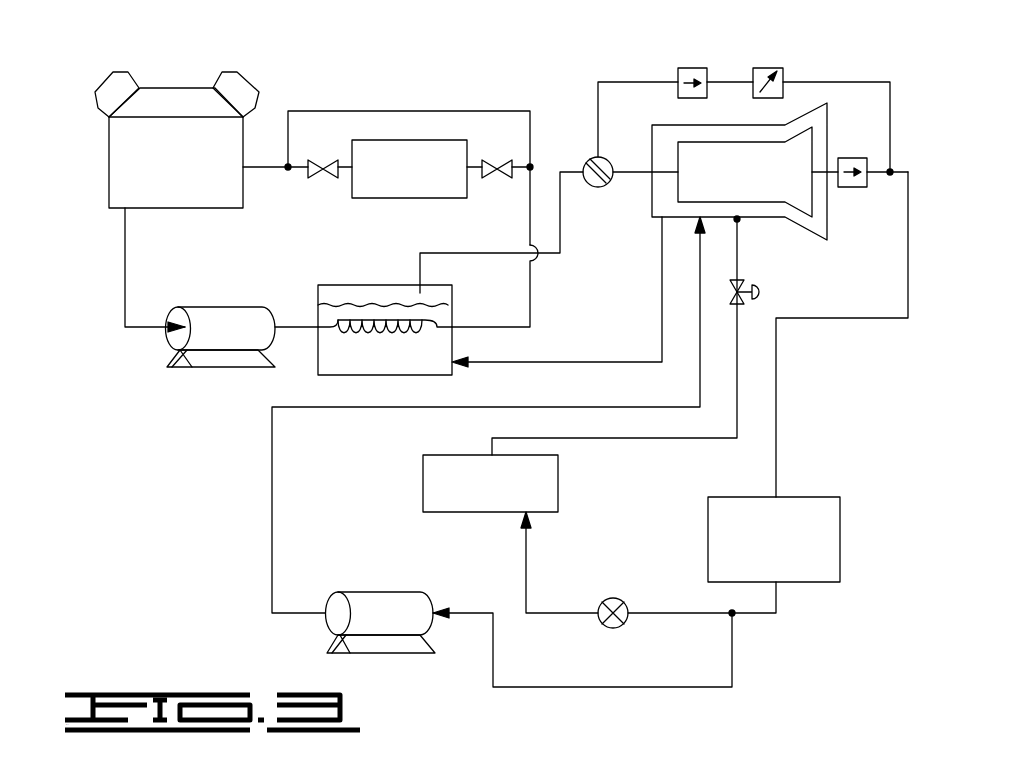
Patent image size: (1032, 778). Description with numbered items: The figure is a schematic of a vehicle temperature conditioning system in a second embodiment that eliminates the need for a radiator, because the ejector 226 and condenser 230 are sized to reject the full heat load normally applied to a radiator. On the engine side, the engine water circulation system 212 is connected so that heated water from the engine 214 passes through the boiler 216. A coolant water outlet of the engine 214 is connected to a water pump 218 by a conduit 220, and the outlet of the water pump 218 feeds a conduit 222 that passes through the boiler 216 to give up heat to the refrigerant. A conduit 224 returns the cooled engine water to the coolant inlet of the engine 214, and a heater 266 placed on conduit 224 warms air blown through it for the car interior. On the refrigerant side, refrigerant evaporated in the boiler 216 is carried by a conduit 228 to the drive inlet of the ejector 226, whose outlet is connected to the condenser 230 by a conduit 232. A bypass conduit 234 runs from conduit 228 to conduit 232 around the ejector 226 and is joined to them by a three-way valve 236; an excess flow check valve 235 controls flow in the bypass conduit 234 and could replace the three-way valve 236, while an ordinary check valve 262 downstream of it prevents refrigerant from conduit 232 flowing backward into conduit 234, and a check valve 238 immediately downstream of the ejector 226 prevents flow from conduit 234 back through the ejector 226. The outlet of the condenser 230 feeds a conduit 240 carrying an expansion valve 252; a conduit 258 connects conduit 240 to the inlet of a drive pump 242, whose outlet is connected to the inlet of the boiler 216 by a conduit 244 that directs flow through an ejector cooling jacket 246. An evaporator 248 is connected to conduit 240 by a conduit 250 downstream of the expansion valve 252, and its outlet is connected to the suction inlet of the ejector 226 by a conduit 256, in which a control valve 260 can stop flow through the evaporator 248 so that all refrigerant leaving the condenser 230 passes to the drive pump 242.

The engine water circulation system 212 is at (145, 350).
The engine 214 is at (175, 102).
The boiler 216 is at (331, 298).
The water pump 218 is at (200, 362).
The conduit 220 is at (125, 238).
The conduit 222 is at (285, 322).
The conduit 224 is at (530, 307).
The ejector 226 is at (717, 148).
The conduit 228 is at (478, 253).
The condenser 230 is at (840, 508).
The conduit 232 is at (776, 396).
The bypass conduit 234 is at (617, 80).
The excess flow check valve 235 is at (695, 66).
The three-way valve 236 is at (588, 160).
The check valve 238 is at (850, 190).
The conduit 240 is at (776, 605).
The drive pump 242 is at (403, 648).
The conduit 244 is at (541, 363).
The ejector cooling jacket 246 is at (765, 213).
The evaporator 248 is at (423, 492).
The conduit 250 is at (527, 555).
The expansion valve 252 is at (615, 628).
The conduit 256 is at (634, 438).
The conduit 258 is at (733, 666).
The control valve 260 is at (765, 300).
The check valve 262 is at (772, 66).
The heater 266 is at (373, 185).